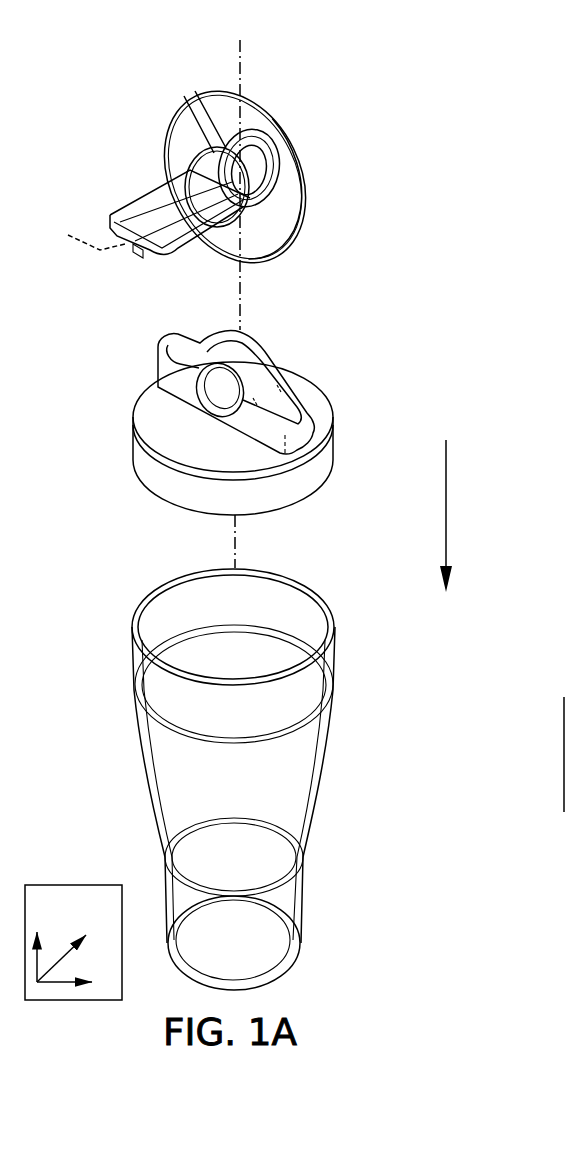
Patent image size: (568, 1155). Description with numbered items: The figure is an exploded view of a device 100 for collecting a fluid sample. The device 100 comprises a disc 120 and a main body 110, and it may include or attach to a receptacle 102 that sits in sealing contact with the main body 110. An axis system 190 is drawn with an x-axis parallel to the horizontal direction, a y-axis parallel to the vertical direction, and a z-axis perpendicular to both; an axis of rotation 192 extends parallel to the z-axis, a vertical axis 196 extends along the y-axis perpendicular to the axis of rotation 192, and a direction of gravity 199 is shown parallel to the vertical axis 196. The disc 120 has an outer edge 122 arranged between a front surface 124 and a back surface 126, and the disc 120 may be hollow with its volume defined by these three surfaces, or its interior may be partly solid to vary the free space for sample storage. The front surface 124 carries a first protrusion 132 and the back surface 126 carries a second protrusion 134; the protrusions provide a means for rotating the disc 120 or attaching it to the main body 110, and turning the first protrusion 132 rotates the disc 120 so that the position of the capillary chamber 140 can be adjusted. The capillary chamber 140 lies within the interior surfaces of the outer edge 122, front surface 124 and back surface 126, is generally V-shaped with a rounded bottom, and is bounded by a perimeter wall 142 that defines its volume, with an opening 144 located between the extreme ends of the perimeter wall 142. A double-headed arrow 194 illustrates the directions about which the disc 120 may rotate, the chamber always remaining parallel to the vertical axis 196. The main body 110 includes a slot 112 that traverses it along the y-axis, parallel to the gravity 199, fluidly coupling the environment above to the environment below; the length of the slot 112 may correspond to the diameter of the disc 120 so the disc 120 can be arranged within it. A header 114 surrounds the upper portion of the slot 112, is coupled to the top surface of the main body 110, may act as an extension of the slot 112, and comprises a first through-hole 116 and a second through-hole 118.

The device 100 is at (399, 99).
The receptacle 102 is at (320, 582).
The main body 110 is at (247, 398).
The slot 112 is at (170, 345).
The header 114 is at (273, 353).
The first through-hole 116 is at (200, 393).
The second through-hole 118 is at (225, 346).
The disc 120 is at (266, 161).
The outer edge 122 is at (290, 248).
The front surface 124 is at (258, 240).
The back surface 126 is at (313, 228).
The first protrusion 132 is at (143, 221).
The second protrusion 134 is at (283, 133).
The capillary chamber 140 is at (227, 88).
The perimeter wall 142 is at (200, 115).
The opening 144 is at (218, 93).
The axis system 190 is at (101, 883).
The axis of rotation 192 is at (130, 217).
The double-headed arrow 194 is at (133, 262).
The vertical axis 196 is at (244, 47).
The direction of gravity 199 is at (448, 470).